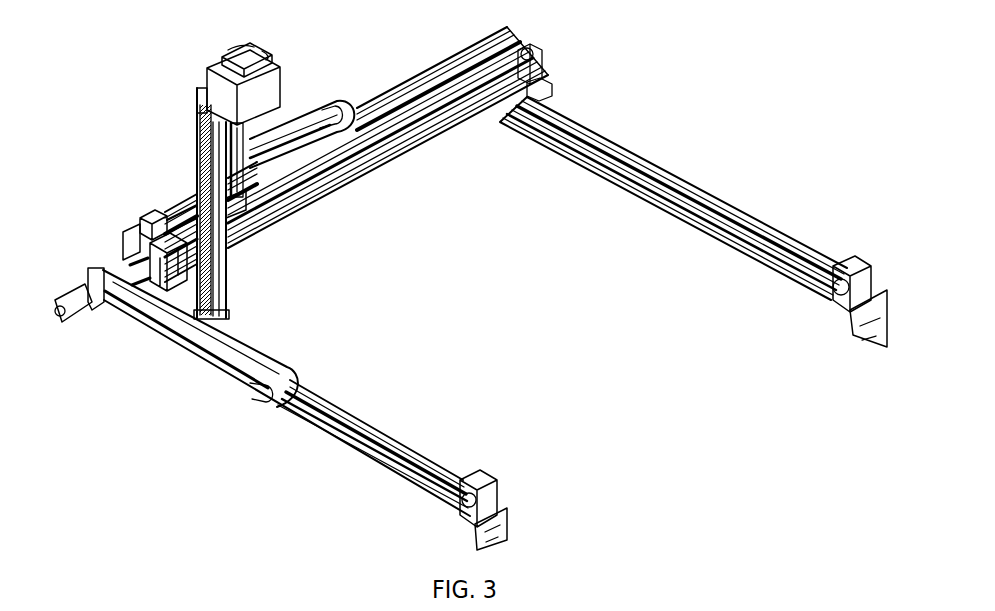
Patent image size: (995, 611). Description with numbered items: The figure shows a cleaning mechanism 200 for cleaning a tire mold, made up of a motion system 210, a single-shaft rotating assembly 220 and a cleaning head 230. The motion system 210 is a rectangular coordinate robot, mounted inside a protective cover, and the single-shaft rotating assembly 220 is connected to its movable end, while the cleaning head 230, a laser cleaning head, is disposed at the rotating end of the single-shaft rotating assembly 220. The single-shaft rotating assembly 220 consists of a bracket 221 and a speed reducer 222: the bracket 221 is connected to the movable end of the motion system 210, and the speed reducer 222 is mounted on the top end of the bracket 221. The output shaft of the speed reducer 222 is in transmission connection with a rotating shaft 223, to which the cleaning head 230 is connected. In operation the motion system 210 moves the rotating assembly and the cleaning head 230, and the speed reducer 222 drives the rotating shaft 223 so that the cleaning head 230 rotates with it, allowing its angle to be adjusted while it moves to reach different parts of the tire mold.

The cleaning mechanism 200 is at (825, 143).
The motion system 210 is at (683, 168).
The cleaning head 230 is at (303, 213).
The single-shaft rotating assembly 220 is at (97, 45).
The bracket 221 is at (227, 181).
The speed reducer 222 is at (207, 70).
The rotating shaft 223 is at (237, 138).